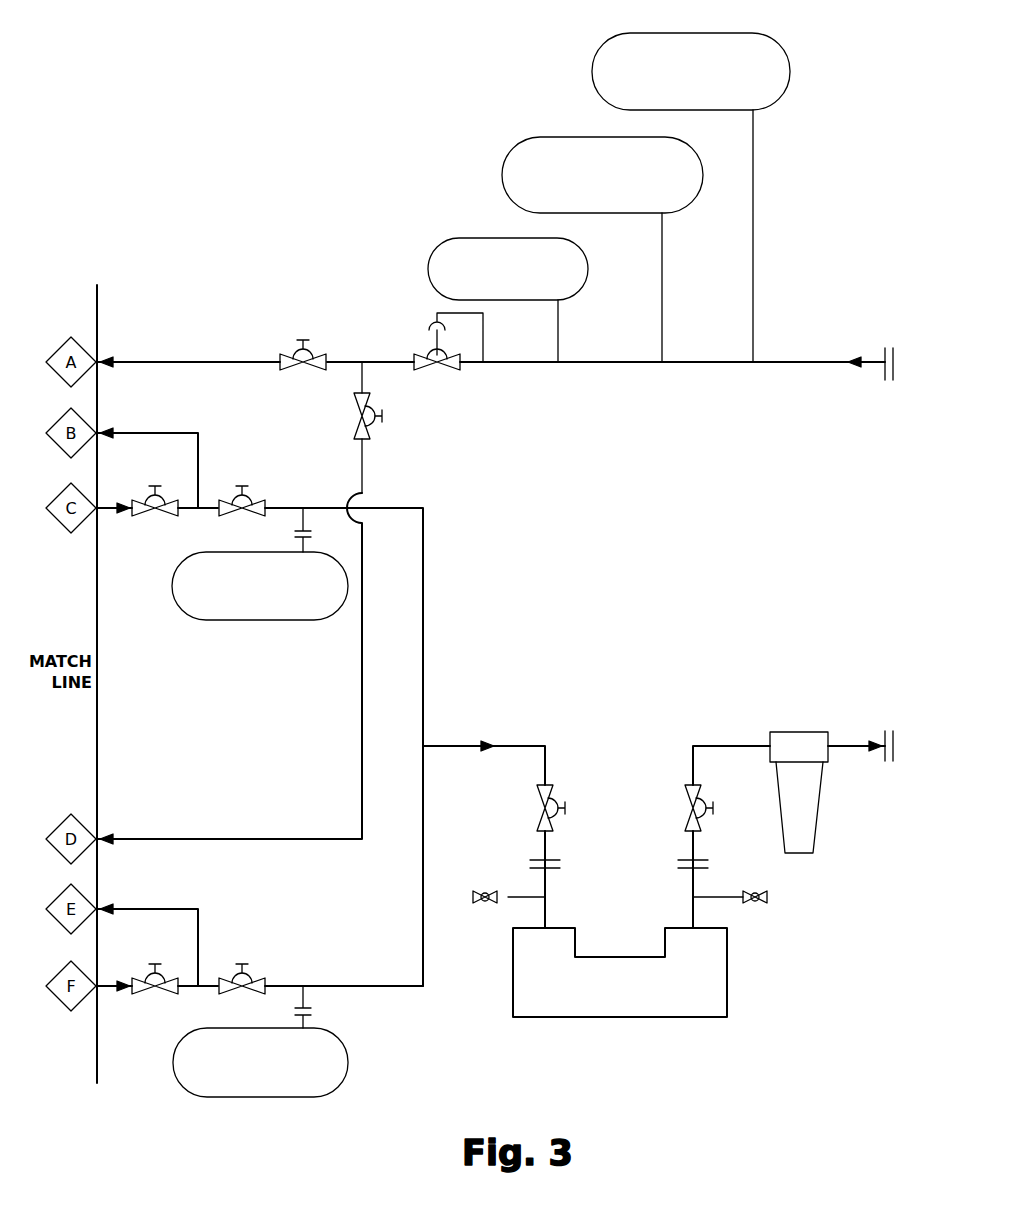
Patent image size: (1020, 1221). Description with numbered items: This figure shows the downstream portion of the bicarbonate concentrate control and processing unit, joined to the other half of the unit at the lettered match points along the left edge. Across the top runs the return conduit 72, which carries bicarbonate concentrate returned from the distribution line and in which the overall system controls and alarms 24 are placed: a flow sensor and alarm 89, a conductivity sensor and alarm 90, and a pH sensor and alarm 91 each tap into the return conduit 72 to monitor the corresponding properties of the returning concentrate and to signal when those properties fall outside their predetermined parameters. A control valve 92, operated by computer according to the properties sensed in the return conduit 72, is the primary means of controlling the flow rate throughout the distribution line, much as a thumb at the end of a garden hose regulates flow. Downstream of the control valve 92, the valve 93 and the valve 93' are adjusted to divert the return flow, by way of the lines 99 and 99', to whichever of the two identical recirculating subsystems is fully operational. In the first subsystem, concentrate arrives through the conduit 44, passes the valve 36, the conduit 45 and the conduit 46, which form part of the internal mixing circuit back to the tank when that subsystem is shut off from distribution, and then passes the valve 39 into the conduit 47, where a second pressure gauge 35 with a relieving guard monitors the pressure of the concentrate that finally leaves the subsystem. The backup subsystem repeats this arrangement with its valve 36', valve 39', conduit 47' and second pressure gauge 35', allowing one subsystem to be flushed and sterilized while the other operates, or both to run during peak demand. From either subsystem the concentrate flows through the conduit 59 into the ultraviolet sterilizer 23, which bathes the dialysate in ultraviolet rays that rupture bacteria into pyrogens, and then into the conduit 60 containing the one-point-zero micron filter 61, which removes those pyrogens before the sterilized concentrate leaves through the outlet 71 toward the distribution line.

The flow sensor and alarm 89 is at (680, 33).
The conductivity sensor and alarm 90 is at (672, 213).
The pH sensor and alarm 91 is at (566, 300).
The overall system controls and alarms 24 is at (483, 196).
The return conduit 72 is at (811, 362).
The line to match line A 99 is at (188, 352).
The valve 93 is at (347, 349).
The control valve 92 is at (430, 353).
The valve 93' is at (386, 427).
The conduit 44 is at (108, 512).
The valve 36 is at (145, 494).
The conduit 45 is at (180, 512).
The conduit 46 is at (140, 432).
The valve 39 is at (254, 492).
The conduit 47 is at (344, 727).
The second pressure gauge 35 is at (260, 578).
The line to D 99' is at (229, 668).
The conduit 59 is at (455, 745).
The ultraviolet sterilizer 23 is at (620, 996).
The conduit 60 is at (736, 745).
The 1.0 micron filter 61 is at (800, 770).
The outlet line 71 is at (850, 745).
The valve 36' is at (137, 1000).
The valve 39' is at (200, 949).
The conduit 47' is at (344, 971).
The second pressure gauge 35' is at (260, 1055).